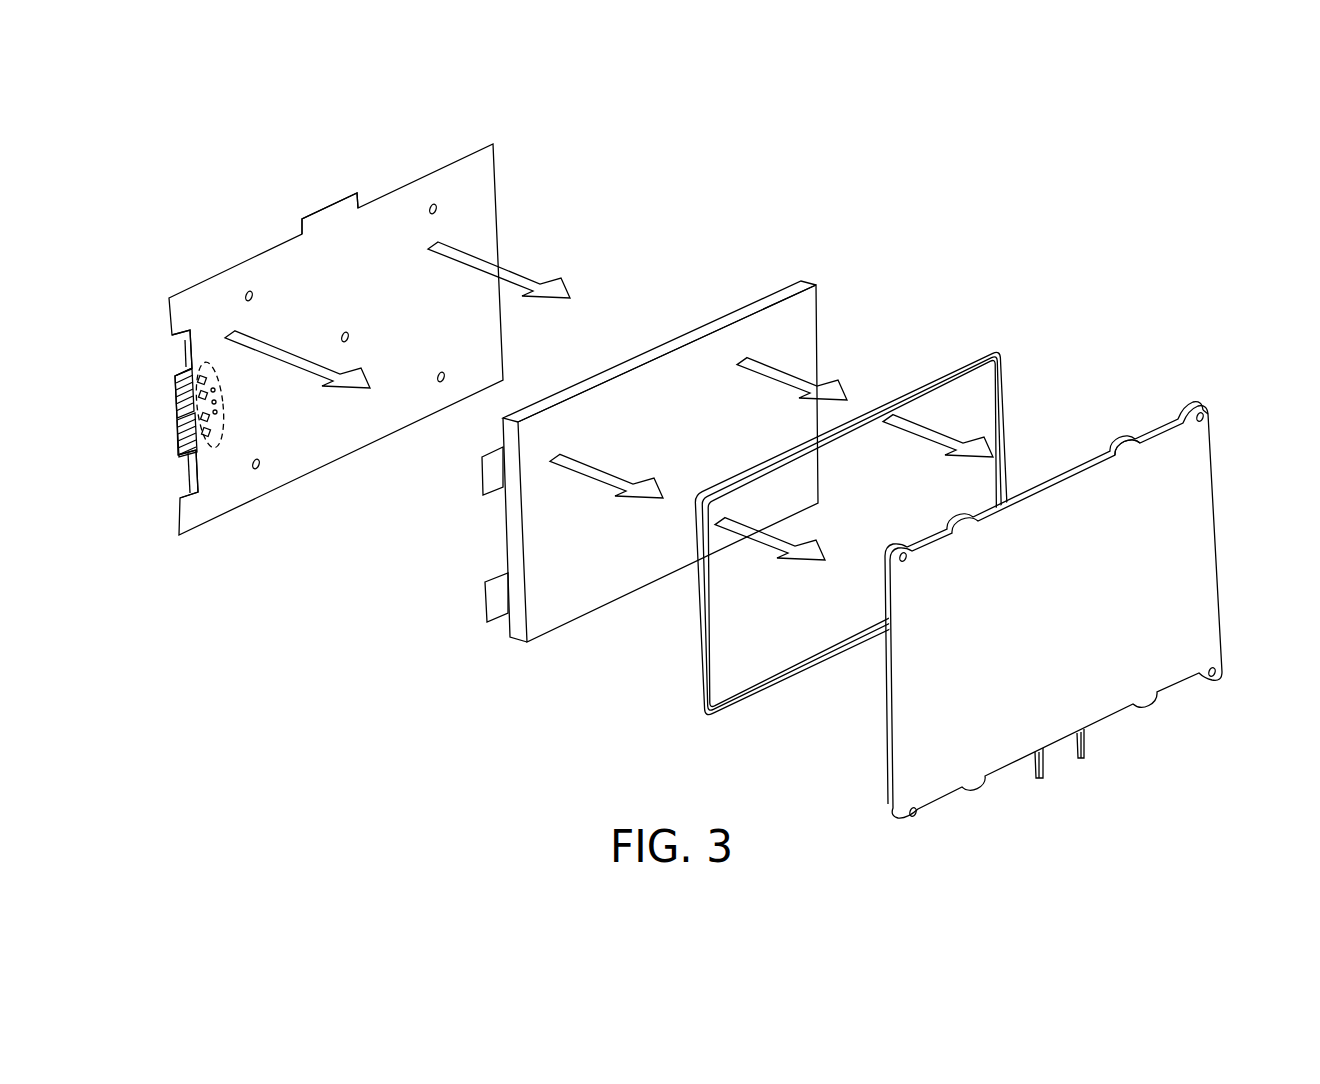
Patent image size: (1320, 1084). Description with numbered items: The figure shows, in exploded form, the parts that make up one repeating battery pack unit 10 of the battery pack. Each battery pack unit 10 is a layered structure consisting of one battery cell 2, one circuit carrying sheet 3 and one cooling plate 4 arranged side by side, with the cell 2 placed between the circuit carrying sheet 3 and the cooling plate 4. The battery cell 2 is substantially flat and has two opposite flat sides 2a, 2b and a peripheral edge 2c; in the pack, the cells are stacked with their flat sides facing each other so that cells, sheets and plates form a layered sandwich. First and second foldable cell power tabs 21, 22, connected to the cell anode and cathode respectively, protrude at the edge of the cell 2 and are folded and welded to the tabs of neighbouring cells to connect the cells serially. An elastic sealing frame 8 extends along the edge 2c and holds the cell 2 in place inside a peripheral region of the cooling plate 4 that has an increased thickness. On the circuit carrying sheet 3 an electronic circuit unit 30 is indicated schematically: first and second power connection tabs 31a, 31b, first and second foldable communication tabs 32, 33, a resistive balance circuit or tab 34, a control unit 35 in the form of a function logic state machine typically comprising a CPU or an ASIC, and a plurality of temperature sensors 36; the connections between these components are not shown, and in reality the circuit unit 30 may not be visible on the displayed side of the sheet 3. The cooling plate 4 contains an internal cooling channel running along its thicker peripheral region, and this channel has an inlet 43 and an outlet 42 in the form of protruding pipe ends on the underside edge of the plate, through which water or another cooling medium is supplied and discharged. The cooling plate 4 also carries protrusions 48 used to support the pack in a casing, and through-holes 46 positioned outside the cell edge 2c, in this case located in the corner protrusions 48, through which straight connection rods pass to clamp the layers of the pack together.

The repeating battery pack unit 10 is at (1039, 190).
The battery cell 2 is at (790, 360).
The side of battery cell 2a is at (782, 326).
The side of battery cell 2b is at (760, 295).
The peripheral edge of battery cell 2c is at (697, 330).
The circuit carrying sheet 3 is at (468, 217).
The cooling plate 4 is at (1145, 626).
The elastic sealing frame 8 is at (1003, 377).
The first foldable cell power tab 21 is at (495, 598).
The second foldable cell power tab 22 is at (495, 472).
The electronic circuit unit 30 is at (146, 485).
The first power connection tab 31a is at (190, 482).
The second power connection tab 31b is at (183, 355).
The first foldable communication tab 32 is at (182, 443).
The second foldable communication tab 33 is at (181, 392).
The resistive balance circuit/tab 34 is at (327, 215).
The control unit 35 is at (222, 440).
The temperature sensor 36 is at (340, 335).
The outlet 42 is at (1041, 767).
The inlet 43 is at (1084, 747).
The through-hole 46 is at (1222, 675).
The protrusion 48 is at (1124, 444).